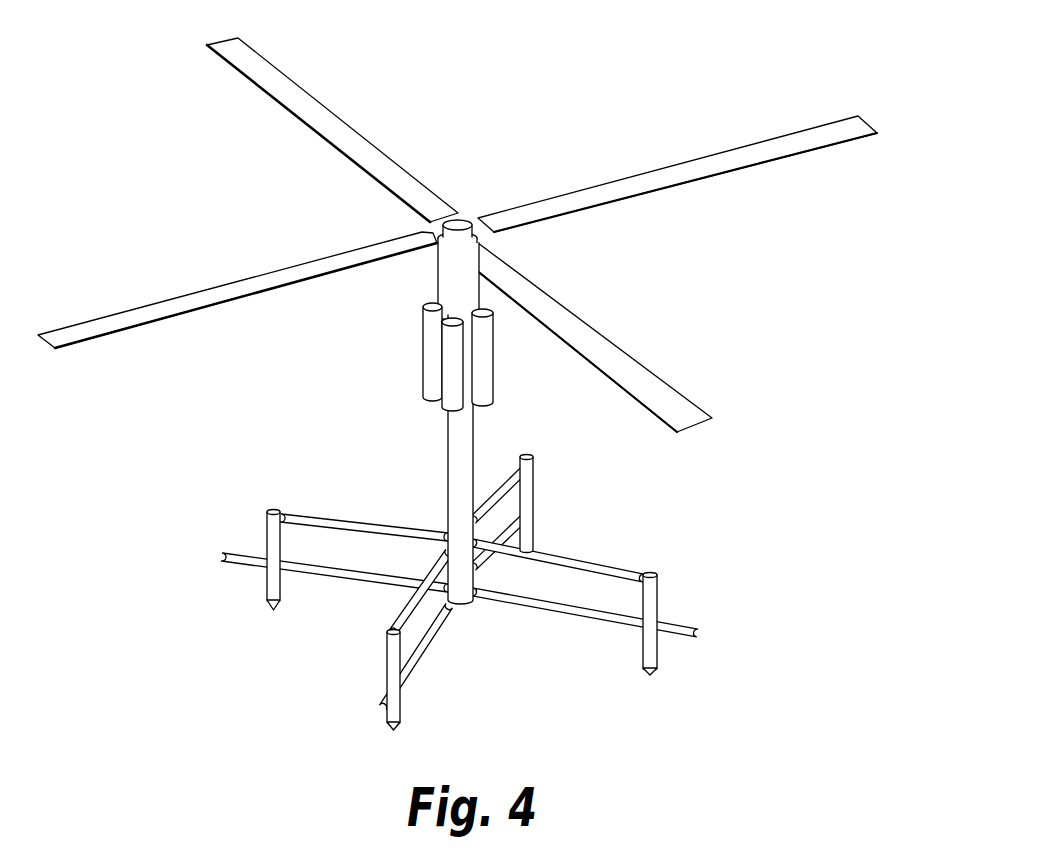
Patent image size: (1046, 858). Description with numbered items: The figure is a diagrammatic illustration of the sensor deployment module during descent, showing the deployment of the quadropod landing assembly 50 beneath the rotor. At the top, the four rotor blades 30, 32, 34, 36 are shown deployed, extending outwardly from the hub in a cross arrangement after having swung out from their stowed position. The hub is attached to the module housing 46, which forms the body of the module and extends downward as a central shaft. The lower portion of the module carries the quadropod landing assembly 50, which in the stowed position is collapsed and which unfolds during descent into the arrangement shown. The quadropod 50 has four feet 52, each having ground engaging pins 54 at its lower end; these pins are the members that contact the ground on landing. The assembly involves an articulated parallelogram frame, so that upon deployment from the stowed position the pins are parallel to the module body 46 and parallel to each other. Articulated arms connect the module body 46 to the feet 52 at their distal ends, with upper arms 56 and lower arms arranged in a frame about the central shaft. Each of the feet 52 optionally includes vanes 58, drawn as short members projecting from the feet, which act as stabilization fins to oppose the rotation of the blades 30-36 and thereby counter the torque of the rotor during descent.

The blade 30 is at (638, 367).
The blade 32 is at (688, 165).
The blade 34 is at (297, 88).
The blade 36 is at (208, 295).
The module housing 46 is at (450, 430).
The quadropod landing assembly 50 is at (456, 569).
The feet 52 is at (266, 537).
The ground engaging pins 54 is at (266, 588).
The upper support tube 56 is at (363, 523).
The vanes 58 is at (220, 561).